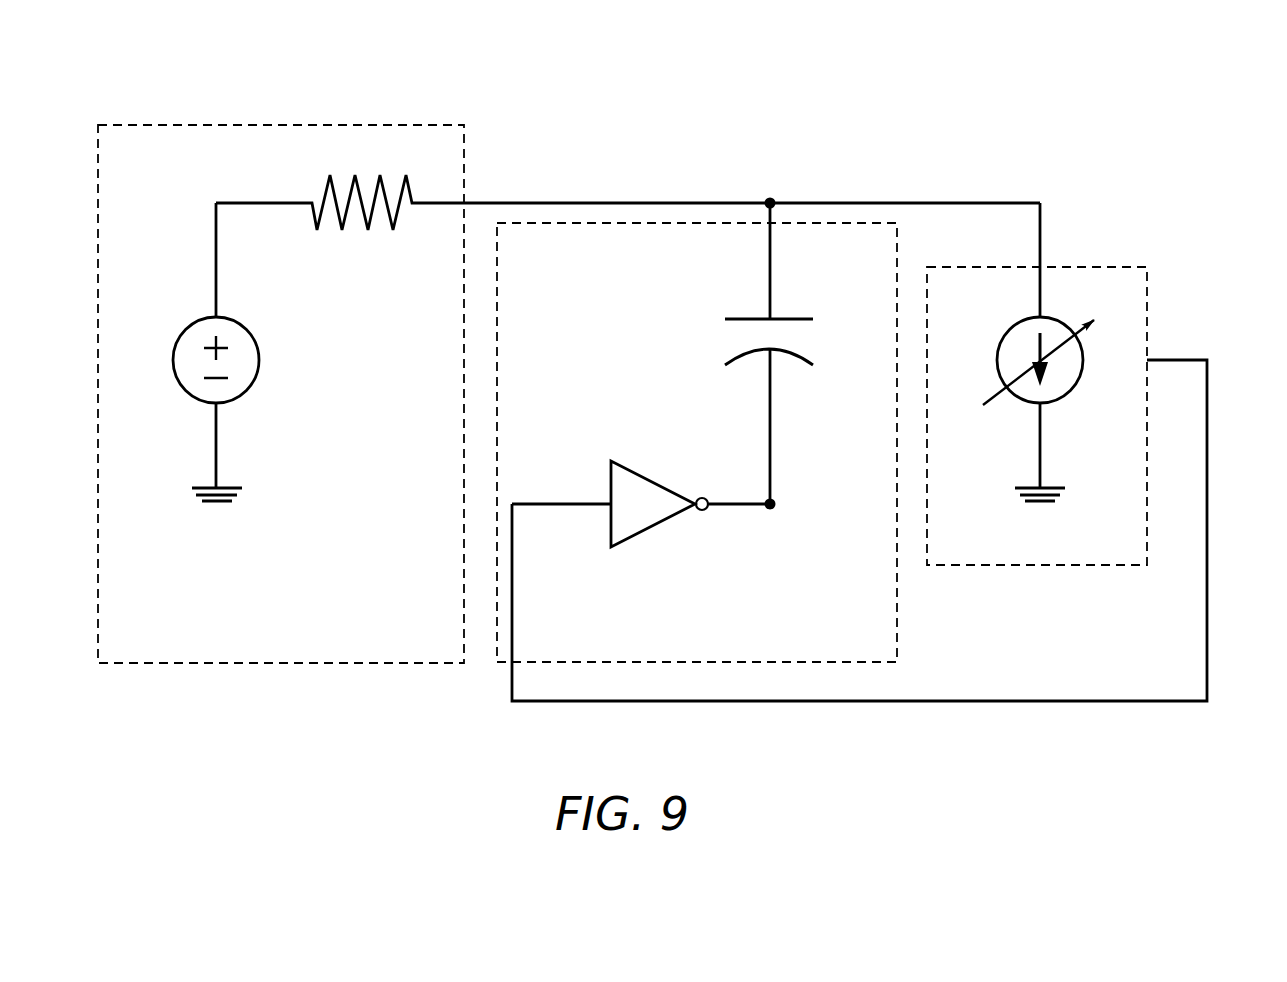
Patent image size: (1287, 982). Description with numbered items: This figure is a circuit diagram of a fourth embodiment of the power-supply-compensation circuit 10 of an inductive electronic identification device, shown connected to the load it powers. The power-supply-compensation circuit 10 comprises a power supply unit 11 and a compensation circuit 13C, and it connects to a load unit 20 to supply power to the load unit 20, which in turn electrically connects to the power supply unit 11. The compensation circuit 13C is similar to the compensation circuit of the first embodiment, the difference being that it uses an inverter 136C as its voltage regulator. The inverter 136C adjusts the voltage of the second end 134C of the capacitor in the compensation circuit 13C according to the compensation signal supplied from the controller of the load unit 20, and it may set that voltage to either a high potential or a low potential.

The power-supply-compensation circuit 10 is at (578, 196).
The power supply unit 11 is at (179, 117).
The compensation circuit 13C is at (852, 481).
The second end of the capacitor 134C is at (770, 510).
The inverter 136C is at (607, 456).
The load unit 20 is at (1108, 252).